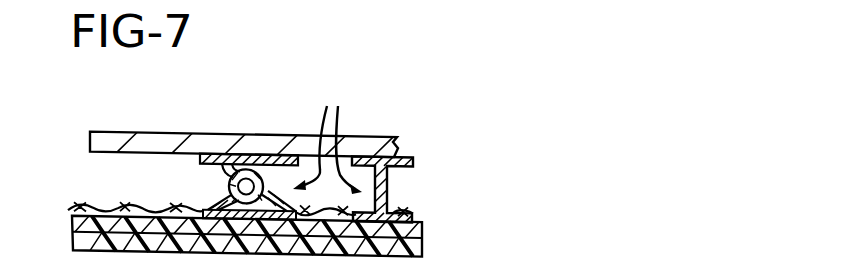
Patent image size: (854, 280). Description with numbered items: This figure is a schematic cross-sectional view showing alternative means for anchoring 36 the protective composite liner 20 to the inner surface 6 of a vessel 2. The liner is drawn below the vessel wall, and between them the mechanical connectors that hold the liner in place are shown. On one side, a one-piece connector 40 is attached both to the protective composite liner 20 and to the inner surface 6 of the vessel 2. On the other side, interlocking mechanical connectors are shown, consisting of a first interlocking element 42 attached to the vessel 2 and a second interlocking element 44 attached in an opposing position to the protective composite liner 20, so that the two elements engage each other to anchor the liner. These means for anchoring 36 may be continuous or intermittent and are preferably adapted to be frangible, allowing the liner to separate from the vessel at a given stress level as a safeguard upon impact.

The vessel 2 is at (268, 133).
The inner surface 6 is at (103, 156).
The first interlocking element 42 is at (176, 152).
The means for anchoring 36 is at (286, 58).
The one-piece connector 40 is at (390, 183).
The second interlocking element 44 is at (210, 200).
The protective composite liner 20 is at (434, 233).